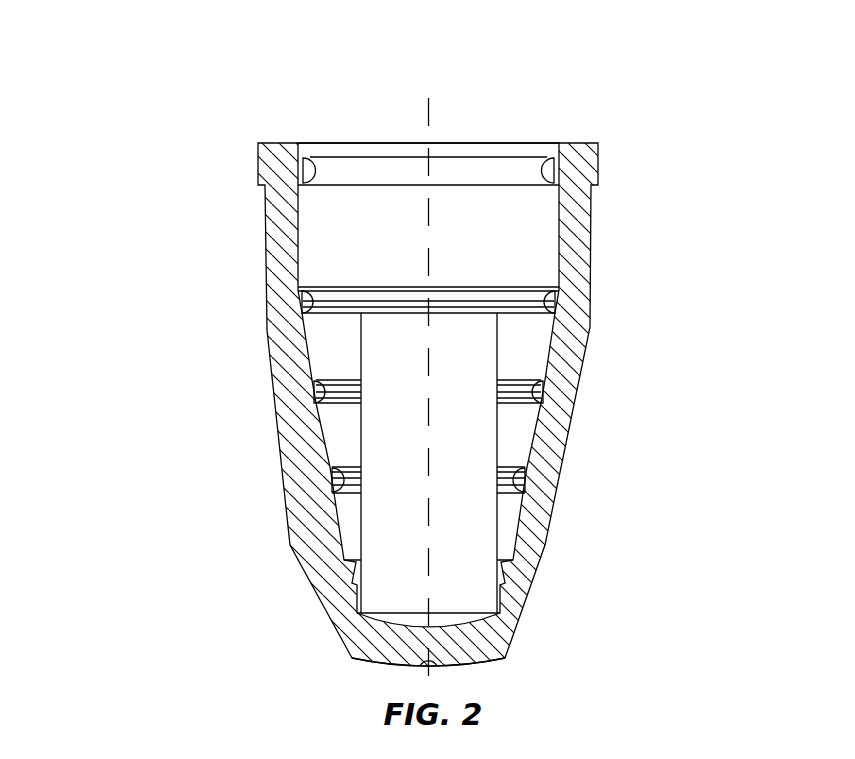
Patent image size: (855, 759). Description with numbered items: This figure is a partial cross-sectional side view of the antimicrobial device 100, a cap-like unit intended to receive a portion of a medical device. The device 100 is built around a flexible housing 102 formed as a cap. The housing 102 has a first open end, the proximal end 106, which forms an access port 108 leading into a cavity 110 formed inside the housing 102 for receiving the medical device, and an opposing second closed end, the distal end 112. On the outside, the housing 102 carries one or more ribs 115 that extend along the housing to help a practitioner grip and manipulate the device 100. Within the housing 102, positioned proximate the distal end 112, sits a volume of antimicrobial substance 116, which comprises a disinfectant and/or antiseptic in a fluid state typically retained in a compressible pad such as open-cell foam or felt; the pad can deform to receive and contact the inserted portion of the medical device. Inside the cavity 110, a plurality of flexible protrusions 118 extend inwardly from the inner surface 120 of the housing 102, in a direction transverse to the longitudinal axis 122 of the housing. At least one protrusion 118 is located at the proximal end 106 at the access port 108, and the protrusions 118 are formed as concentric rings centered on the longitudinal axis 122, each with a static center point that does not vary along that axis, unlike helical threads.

The antimicrobial device 100 is at (152, 93).
The flexible housing 102 is at (282, 257).
The proximal end 106 is at (357, 76).
The access port 108 is at (322, 137).
The cavity 110 is at (353, 530).
The distal end 112 is at (540, 648).
The ribs 115 is at (302, 522).
The volume of antimicrobial substance 116 is at (377, 380).
The flexible protrusions 118 is at (532, 175).
The inner surface 120 is at (323, 435).
The longitudinal axis 122 is at (429, 105).